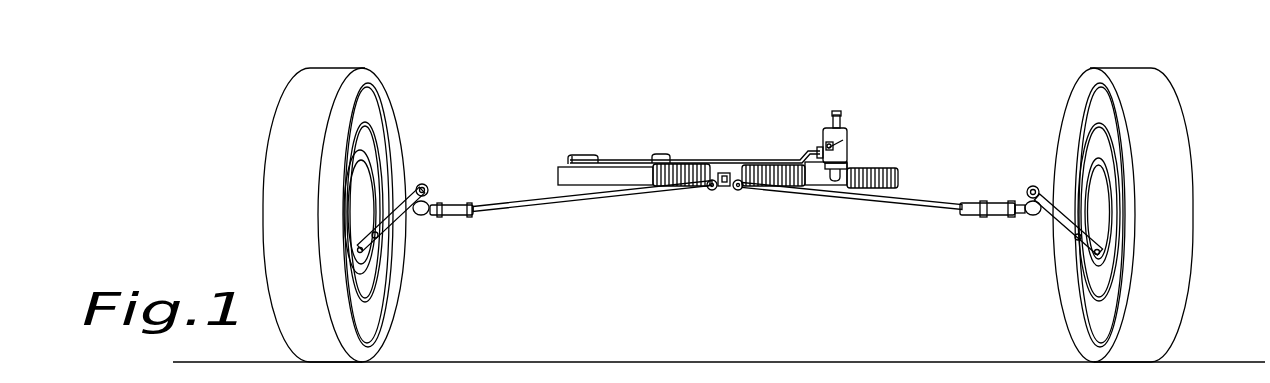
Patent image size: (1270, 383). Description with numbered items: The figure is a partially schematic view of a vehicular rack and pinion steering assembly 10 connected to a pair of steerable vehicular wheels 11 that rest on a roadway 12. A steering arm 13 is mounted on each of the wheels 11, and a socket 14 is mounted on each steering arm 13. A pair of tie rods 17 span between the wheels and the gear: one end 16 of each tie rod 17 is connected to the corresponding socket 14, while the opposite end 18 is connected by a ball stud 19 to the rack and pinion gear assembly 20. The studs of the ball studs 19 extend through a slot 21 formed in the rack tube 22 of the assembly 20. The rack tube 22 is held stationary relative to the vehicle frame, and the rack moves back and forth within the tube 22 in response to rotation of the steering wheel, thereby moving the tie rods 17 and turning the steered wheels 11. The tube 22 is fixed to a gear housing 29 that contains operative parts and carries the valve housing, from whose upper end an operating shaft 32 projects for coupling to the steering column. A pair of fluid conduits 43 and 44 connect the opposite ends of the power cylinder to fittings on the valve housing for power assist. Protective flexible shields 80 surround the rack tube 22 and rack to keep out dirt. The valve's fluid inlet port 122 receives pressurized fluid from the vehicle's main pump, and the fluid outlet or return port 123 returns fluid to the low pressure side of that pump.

The steering assembly 10 is at (715, 197).
The steerable vehicular wheels 11 is at (388, 298).
The roadway 12 is at (523, 362).
The steering arm 13 is at (387, 223).
The socket 14 is at (428, 195).
The end of tie rod 16 is at (457, 212).
The tie rods 17 is at (502, 198).
The opposite end of tie rod 18 is at (708, 189).
The ball stud 19 is at (737, 176).
The rack and pinion gear assembly 20 is at (556, 175).
The slot 21 is at (727, 188).
The rack tube 22 is at (605, 172).
The gear housing 29 is at (840, 174).
The operating shaft 32 is at (838, 114).
The fluid conduit 43 is at (632, 162).
The fluid conduit 44 is at (658, 156).
The protective flexible shields 80 is at (887, 168).
The fluid inlet port 122 is at (826, 143).
The fluid outlet or return port 123 is at (842, 141).